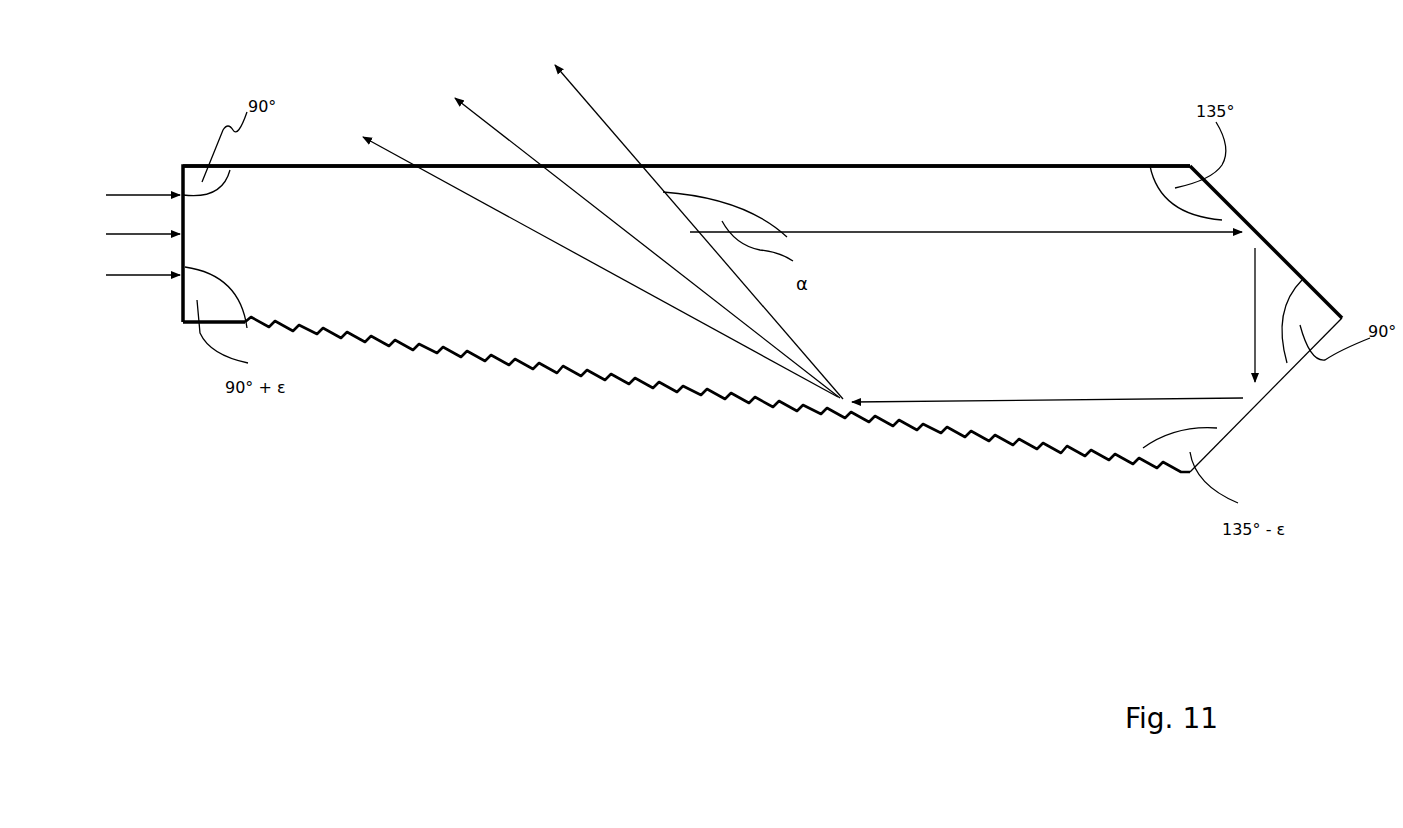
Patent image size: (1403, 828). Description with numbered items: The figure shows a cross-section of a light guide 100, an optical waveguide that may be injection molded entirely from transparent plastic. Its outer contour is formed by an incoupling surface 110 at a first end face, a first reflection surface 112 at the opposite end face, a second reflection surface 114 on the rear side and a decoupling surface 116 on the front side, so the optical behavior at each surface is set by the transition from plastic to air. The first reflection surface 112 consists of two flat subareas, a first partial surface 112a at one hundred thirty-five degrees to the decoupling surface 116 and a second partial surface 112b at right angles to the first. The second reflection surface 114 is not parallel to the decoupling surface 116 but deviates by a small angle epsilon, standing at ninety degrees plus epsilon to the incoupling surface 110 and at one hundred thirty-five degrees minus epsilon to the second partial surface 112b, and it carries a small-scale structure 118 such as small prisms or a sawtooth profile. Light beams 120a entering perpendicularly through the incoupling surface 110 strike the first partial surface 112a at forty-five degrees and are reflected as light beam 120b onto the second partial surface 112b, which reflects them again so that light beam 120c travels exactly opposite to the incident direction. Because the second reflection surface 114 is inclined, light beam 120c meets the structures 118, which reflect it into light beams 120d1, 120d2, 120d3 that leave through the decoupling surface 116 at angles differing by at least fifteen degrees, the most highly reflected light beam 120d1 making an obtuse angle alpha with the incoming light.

The light guide 100 is at (512, 582).
The incoupling surface 110 is at (186, 238).
The first reflection surface 112 is at (1281, 318).
The first partial surface 112a is at (1232, 200).
The second partial surface 112b is at (1262, 400).
The second reflection surface 114 is at (675, 428).
The decoupling surface 116 is at (727, 166).
The small-scale structure 118 is at (872, 418).
The light beam 120a is at (122, 195).
The light beam 120b is at (1240, 313).
The light beam 120c is at (1130, 398).
The light beam 120d1 is at (578, 92).
The light beam 120d2 is at (480, 118).
The light beam 120d3 is at (387, 152).